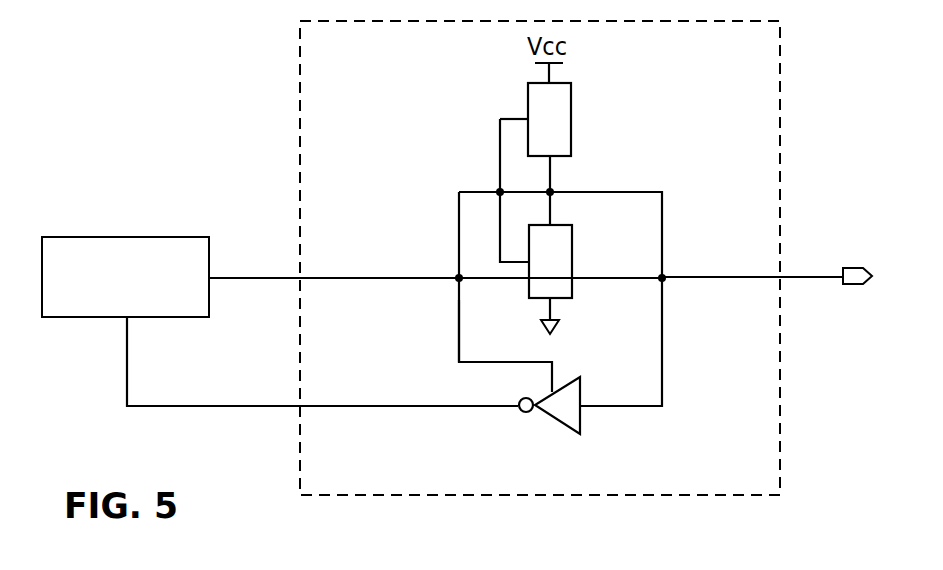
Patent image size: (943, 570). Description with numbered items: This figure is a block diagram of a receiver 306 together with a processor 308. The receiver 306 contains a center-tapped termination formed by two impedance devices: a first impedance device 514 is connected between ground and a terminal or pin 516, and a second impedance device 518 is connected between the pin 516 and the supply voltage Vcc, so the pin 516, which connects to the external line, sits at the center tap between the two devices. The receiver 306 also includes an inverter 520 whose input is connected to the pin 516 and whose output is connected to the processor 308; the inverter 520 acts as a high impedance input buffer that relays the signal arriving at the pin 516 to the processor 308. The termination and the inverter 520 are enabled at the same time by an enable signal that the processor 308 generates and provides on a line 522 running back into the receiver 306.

The receiver 306 is at (298, 72).
The processor 308 is at (124, 236).
The first impedance device 514 is at (575, 261).
The terminal or pin 516 is at (851, 265).
The second impedance device 518 is at (572, 119).
The inverter 520 is at (554, 424).
The line 522 is at (458, 336).